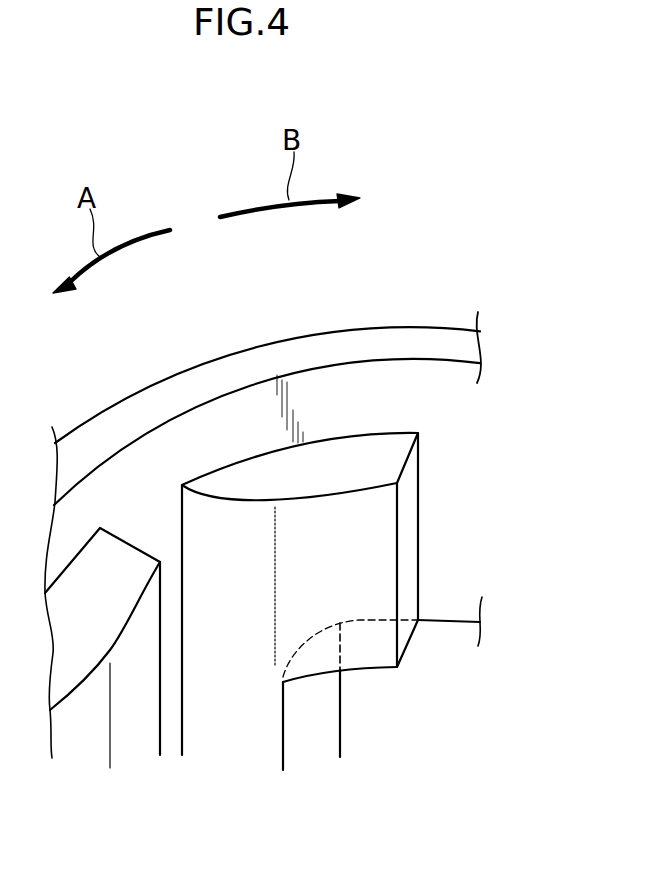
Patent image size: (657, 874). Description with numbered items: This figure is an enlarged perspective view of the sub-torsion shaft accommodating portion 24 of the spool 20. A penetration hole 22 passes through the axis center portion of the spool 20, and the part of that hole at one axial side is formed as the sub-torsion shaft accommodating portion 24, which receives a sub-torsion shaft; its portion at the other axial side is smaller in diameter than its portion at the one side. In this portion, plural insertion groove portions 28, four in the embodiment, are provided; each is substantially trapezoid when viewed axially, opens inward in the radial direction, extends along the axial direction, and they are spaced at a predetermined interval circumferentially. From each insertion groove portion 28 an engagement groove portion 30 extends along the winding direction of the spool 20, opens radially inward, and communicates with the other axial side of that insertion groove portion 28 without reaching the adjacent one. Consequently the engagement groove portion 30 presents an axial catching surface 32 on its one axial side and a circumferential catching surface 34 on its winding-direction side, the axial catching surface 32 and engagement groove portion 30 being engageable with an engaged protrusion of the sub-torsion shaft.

The spool 20 is at (305, 312).
The penetration hole 22 is at (438, 384).
The sub-torsion shaft accommodating portion 24 is at (158, 497).
The insertion groove portion 28 is at (168, 558).
The engagement groove portion 30 is at (352, 693).
The axial catching surface 32 is at (372, 657).
The circumferential catching surface 34 is at (292, 730).